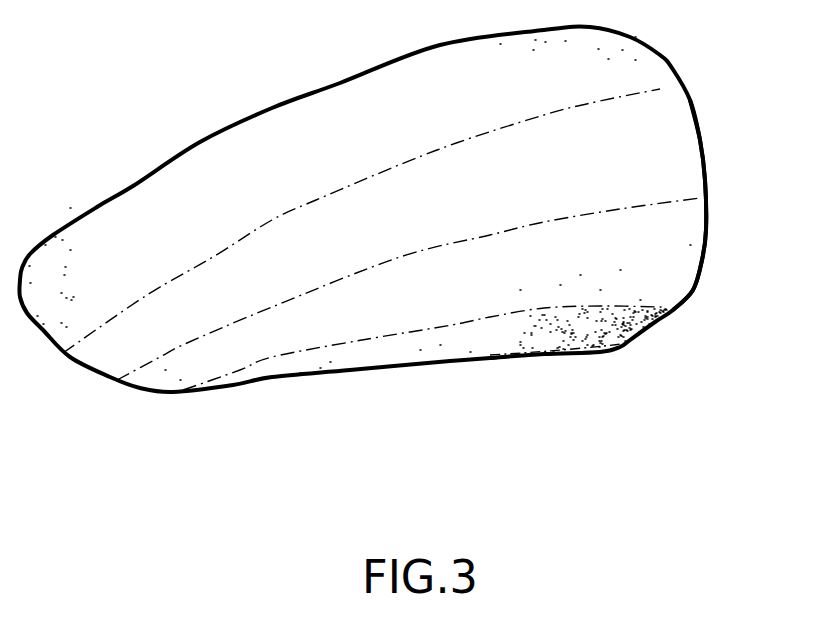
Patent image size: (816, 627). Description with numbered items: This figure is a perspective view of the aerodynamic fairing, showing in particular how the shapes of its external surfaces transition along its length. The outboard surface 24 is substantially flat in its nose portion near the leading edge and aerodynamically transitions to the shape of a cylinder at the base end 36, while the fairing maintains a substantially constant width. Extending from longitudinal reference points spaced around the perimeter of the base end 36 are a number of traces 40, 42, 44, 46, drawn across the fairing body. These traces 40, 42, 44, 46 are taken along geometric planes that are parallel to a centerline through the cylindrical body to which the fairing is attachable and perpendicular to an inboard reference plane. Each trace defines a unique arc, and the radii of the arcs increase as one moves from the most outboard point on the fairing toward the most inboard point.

The outboard surface 24 is at (290, 116).
The base end 36 is at (706, 232).
The trace 40 is at (663, 89).
The trace 42 is at (686, 198).
The trace 44 is at (665, 308).
The trace 46 is at (620, 347).